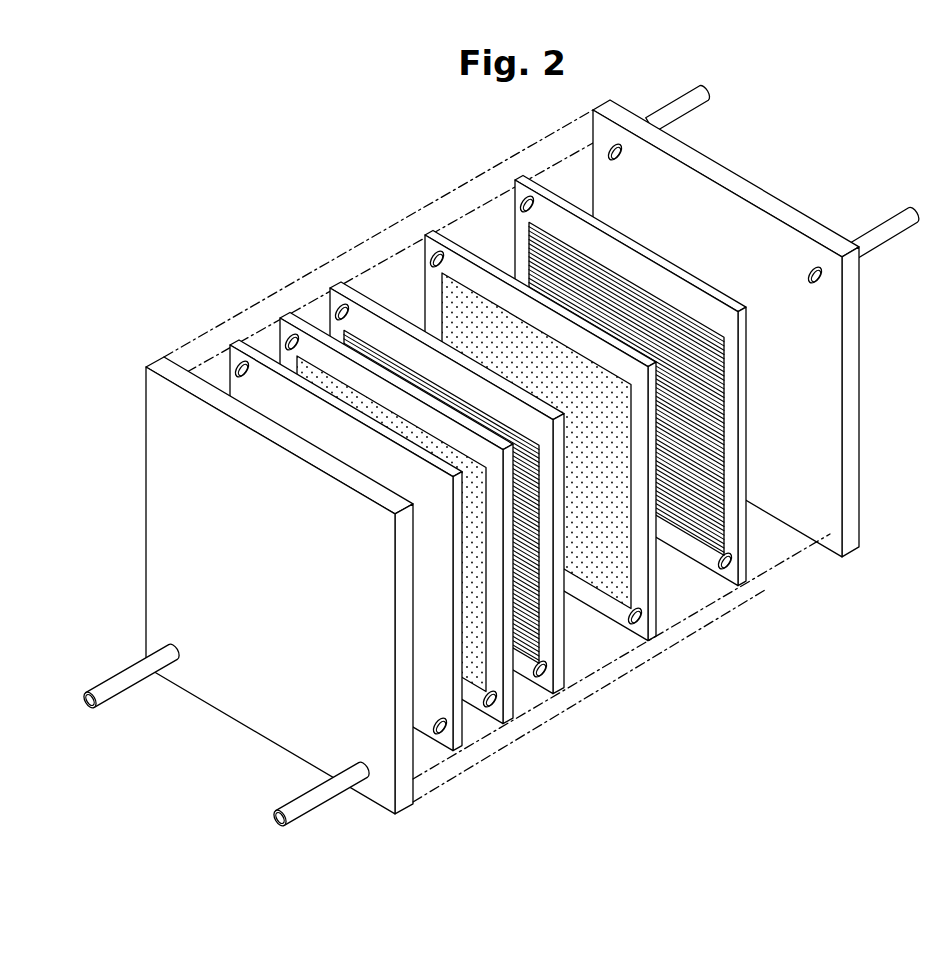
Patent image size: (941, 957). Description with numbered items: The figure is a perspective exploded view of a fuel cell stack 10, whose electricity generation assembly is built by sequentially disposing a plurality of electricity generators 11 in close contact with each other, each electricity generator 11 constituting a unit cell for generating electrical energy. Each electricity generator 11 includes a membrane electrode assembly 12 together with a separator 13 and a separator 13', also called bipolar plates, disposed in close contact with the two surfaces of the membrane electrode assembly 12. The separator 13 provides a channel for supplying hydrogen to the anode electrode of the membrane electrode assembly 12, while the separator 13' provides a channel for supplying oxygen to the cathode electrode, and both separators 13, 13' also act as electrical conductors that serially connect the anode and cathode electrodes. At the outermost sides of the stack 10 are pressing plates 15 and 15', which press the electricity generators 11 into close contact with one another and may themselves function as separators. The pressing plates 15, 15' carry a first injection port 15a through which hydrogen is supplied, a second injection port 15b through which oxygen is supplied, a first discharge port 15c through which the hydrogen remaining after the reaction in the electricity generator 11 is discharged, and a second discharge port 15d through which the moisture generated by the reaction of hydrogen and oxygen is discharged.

The stack 10 is at (789, 109).
The electricity generator 11 is at (803, 621).
The membrane electrode assembly 12 is at (658, 634).
The separator 13 is at (470, 510).
The separator 13' is at (657, 405).
The pressing plate 15 is at (301, 604).
The pressing plate 15' is at (749, 328).
The first injection port 15a is at (671, 105).
The second injection port 15b is at (882, 224).
The first discharge port 15c is at (317, 806).
The second discharge port 15d is at (120, 674).